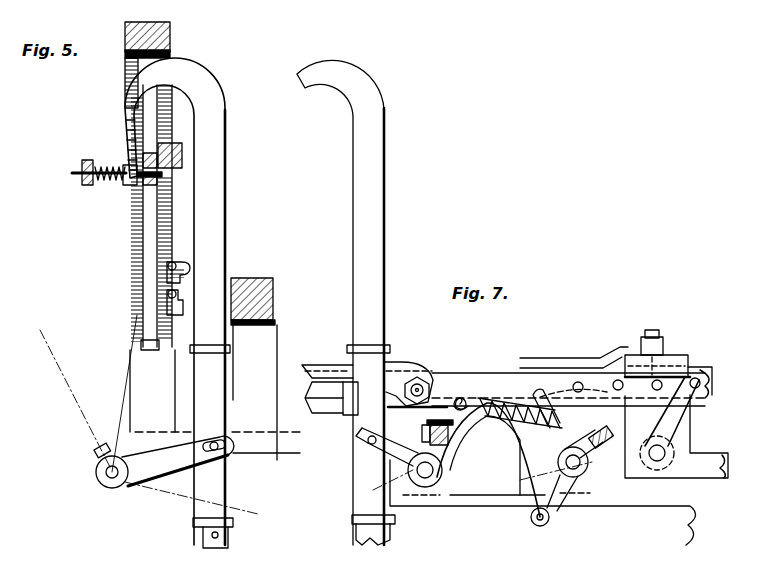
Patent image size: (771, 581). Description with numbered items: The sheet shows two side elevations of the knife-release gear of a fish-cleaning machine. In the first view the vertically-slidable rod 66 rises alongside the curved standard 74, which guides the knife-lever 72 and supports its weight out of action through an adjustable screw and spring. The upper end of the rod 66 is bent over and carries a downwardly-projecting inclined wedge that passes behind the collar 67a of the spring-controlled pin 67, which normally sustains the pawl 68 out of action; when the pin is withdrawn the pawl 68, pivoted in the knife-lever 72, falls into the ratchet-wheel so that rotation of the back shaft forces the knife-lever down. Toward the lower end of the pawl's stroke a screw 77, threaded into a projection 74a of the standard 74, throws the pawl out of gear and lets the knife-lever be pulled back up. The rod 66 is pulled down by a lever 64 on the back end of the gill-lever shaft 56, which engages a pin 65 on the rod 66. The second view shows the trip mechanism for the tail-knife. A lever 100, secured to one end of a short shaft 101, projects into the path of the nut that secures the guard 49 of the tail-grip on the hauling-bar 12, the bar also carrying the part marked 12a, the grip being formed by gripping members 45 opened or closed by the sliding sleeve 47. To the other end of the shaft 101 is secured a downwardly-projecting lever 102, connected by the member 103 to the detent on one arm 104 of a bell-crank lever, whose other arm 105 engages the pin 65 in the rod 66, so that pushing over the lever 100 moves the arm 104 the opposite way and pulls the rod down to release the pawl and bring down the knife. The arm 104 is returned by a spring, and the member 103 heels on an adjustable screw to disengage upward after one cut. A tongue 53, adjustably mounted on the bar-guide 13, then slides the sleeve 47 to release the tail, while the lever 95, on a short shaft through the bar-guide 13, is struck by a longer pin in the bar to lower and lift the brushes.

In FIG. 7, the hauling-bar 12 is at (475, 378).
In FIG. 7, the rail bracket 12a is at (583, 383).
In FIG. 7, the bar-guide 13 is at (688, 436).
In FIG. 5, the gripping members 45 is at (217, 369).
In FIG. 7, the gripping members 45 is at (315, 392).
In FIG. 7, the sliding sleeve 47 is at (347, 403).
In FIG. 7, the guard 49 is at (332, 372).
In FIG. 7, the tongue 53 is at (543, 360).
In FIG. 5, the gill-lever shaft 56 is at (96, 473).
In FIG. 5, the lever 64 is at (168, 462).
In FIG. 5, the pin 65 is at (225, 455).
In FIG. 7, the pin 65 is at (364, 443).
In FIG. 5, the vertically-slidable rod 66 is at (220, 397).
In FIG. 7, the vertically-slidable rod 66 is at (378, 226).
In FIG. 5, the spring-controlled pin 67 is at (74, 173).
In FIG. 5, the collar 67a is at (133, 178).
In FIG. 5, the pawl 68 is at (176, 150).
In FIG. 5, the knife-lever 72 is at (140, 192).
In FIG. 5, the curved standard 74 is at (170, 40).
In FIG. 5, the projection 74a is at (165, 270).
In FIG. 5, the screw 77 is at (165, 291).
In FIG. 7, the lever 95 is at (677, 412).
In FIG. 7, the lever 100 is at (541, 388).
In FIG. 7, the short shaft 101 is at (578, 470).
In FIG. 7, the downwardly-projecting lever 102 is at (562, 505).
In FIG. 7, the member 103 is at (516, 458).
In FIG. 7, the arm of bell-crank lever 104 is at (456, 452).
In FIG. 7, the arm of bell-crank lever 105 is at (383, 450).